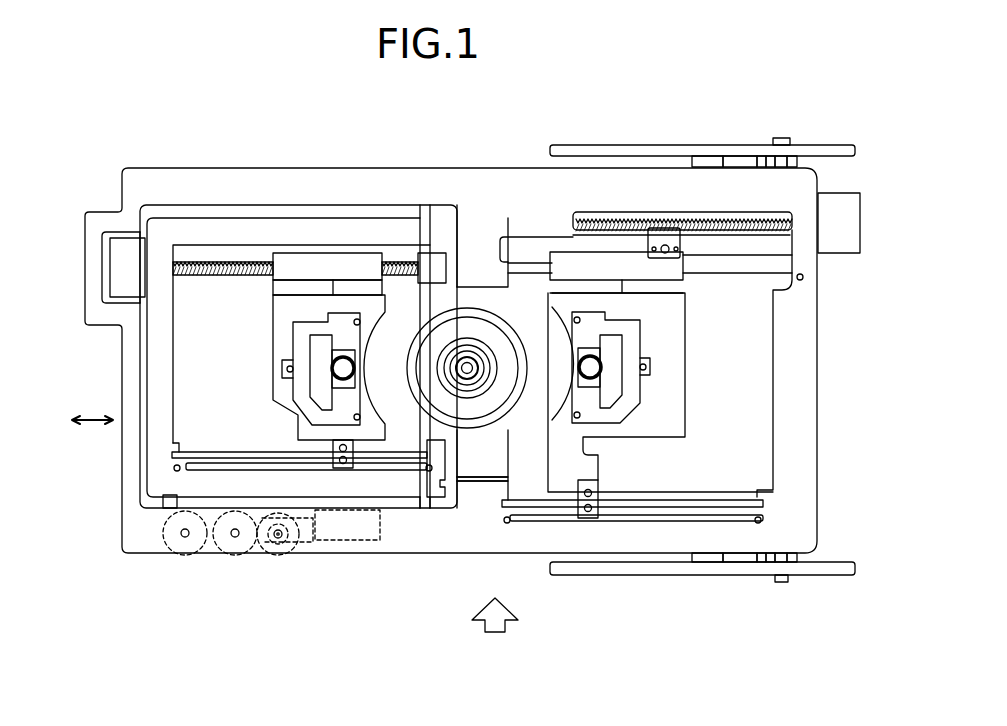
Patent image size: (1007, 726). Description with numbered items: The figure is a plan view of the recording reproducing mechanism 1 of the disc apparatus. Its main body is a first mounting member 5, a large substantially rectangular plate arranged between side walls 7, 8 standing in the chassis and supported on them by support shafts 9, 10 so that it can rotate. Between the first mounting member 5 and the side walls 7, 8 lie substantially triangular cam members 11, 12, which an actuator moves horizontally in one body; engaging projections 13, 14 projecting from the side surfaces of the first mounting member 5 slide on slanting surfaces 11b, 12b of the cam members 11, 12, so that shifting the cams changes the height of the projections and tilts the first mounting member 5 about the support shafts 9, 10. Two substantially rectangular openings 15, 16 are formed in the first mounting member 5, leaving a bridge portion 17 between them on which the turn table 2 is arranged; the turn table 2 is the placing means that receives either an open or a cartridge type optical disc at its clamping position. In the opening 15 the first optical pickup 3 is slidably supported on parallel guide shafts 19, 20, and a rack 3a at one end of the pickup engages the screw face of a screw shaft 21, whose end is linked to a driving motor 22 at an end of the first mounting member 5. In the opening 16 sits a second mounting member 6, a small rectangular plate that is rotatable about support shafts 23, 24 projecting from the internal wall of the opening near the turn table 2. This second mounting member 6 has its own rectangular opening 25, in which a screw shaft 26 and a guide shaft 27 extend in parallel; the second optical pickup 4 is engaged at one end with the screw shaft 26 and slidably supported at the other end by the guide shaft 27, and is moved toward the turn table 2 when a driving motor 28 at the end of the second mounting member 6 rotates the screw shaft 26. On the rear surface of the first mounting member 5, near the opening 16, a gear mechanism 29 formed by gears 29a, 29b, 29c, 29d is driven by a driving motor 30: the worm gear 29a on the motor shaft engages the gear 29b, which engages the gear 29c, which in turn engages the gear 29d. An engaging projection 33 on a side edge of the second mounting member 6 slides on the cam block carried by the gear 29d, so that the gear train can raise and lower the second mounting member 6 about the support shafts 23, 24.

The recording reproducing mechanism 1 is at (417, 149).
The turn table 2 is at (475, 322).
The first optical pickup 3 is at (615, 350).
The rack 3a is at (672, 256).
The second optical pickup 4 is at (318, 345).
The first mounting member 5 is at (536, 205).
The second mounting member 6 is at (305, 228).
The side wall 7 is at (605, 150).
The side wall 8 is at (597, 576).
The support shaft 9 is at (790, 142).
The support shaft 10 is at (790, 578).
The cam member 11 is at (705, 162).
The slanting surface 11b is at (735, 162).
The cam member 12 is at (708, 562).
The slanting surface 12b is at (735, 563).
The engaging projection 13 is at (757, 160).
The engaging projection 14 is at (765, 562).
The opening 15 is at (770, 380).
The opening 16 is at (228, 214).
The bridge portion 17 is at (487, 455).
The guide shaft 19 is at (744, 275).
The guide shaft 20 is at (700, 506).
The screw shaft 21 is at (730, 222).
The driving motor 22 is at (852, 210).
The support shaft 23 is at (422, 215).
The support shaft 24 is at (423, 515).
The rectangular opening 25 is at (185, 378).
The screw shaft 26 is at (228, 278).
The guide shaft 27 is at (228, 455).
The driving motor 28 is at (120, 240).
The gear mechanism 29 is at (236, 578).
The worm gear 29a is at (305, 559).
The gear 29b is at (274, 553).
The gear 29c is at (228, 550).
The gear 29d is at (180, 548).
The driving motor 30 is at (368, 542).
The engaging projection 33 is at (165, 502).